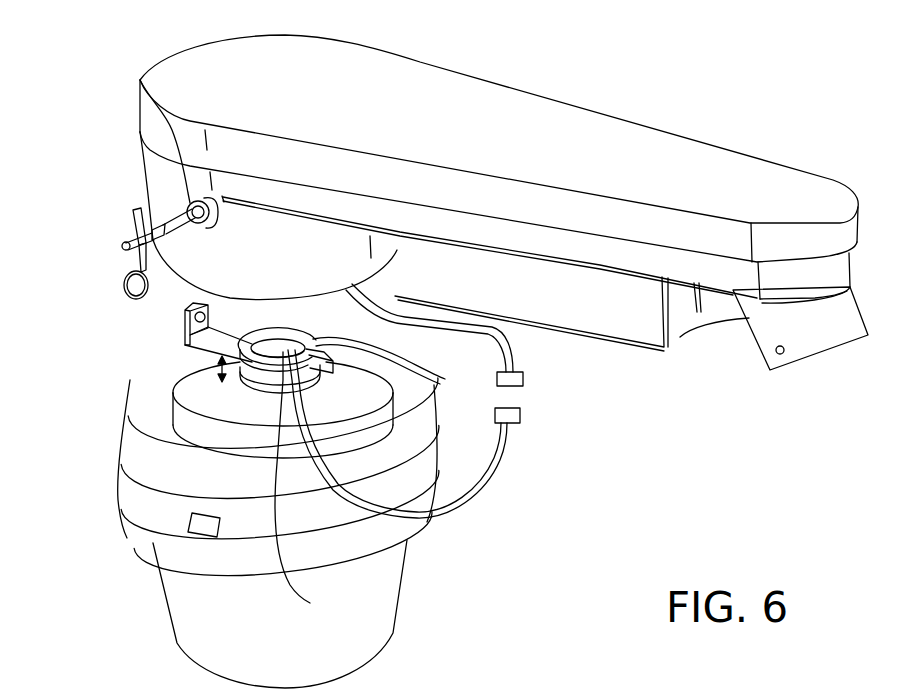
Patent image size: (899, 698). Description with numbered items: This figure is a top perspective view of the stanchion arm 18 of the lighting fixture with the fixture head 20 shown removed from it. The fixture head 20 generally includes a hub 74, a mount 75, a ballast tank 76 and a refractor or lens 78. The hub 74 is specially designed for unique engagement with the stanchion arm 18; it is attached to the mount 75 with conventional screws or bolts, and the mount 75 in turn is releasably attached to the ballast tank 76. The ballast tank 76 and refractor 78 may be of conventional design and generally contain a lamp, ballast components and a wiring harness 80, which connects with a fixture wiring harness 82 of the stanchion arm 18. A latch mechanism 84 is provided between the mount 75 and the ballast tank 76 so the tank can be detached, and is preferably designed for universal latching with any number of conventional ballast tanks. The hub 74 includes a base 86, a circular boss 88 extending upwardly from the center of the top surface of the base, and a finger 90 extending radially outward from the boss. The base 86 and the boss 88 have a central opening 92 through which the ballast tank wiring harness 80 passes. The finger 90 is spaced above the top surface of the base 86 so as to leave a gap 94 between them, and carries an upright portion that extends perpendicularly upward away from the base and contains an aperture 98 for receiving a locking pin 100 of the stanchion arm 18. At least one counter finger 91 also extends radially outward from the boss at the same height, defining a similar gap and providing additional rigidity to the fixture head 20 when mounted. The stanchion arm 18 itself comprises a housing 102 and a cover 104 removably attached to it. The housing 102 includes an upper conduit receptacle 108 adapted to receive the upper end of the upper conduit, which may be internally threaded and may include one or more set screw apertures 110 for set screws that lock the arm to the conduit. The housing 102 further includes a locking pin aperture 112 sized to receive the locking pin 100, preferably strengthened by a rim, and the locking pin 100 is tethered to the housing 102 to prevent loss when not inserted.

The stanchion arm 18 is at (456, 235).
The fixture head 20 is at (290, 482).
The hub 74 is at (173, 413).
The mount 75 is at (140, 465).
The ballast tank 76 is at (249, 548).
The refractor or lens 78 is at (177, 645).
The wiring harness 80 is at (463, 508).
The fixture wiring harness 82 is at (523, 378).
The latch mechanism 84 is at (203, 528).
The base 86 is at (193, 385).
The circular boss 88 is at (313, 344).
The finger 90 is at (196, 311).
The counter finger 91 is at (413, 346).
The central opening 92 is at (309, 485).
The gap 94 is at (217, 369).
The aperture 98 is at (206, 314).
The locking pin 100 is at (128, 228).
The housing 102 is at (673, 343).
The cover 104 is at (695, 150).
The upper conduit receptacle 108 is at (832, 313).
The set screw aperture 110 is at (784, 352).
The locking pin aperture 112 is at (190, 207).